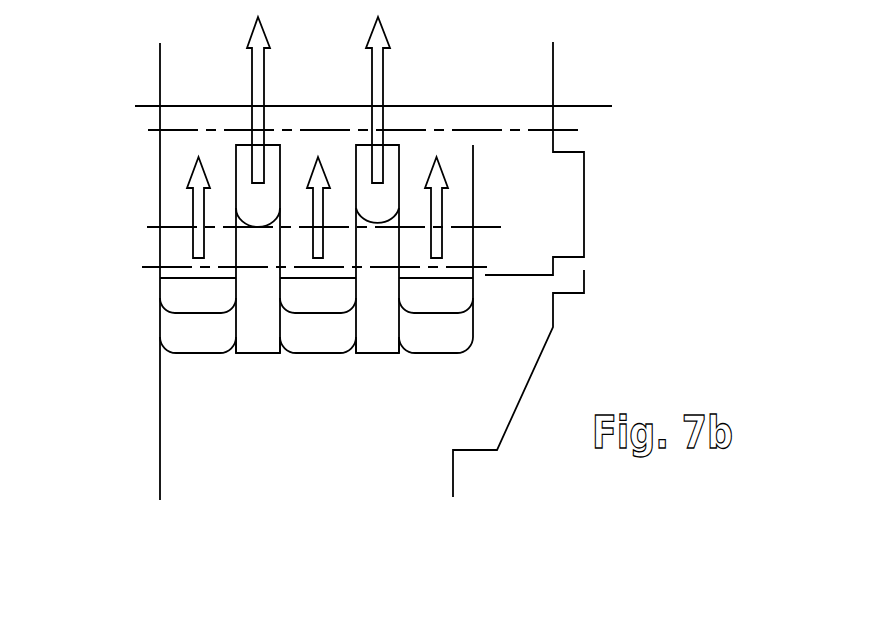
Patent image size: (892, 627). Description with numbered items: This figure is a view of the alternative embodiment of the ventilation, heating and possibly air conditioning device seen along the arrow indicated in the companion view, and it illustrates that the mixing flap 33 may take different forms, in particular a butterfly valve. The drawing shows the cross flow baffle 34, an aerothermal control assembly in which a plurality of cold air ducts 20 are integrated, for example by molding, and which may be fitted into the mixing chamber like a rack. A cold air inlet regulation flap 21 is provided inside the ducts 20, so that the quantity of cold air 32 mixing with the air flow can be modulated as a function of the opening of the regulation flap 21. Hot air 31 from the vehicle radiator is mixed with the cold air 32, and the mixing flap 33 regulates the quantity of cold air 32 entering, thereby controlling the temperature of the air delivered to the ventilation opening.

The cold air ducts 20 is at (185, 295).
The cold air inlet regulation flap 21 is at (147, 267).
The hot air 31 is at (252, 68).
The cold air 32 is at (193, 168).
The mixing flap 33 is at (157, 228).
The cross flow baffle 34 is at (282, 151).